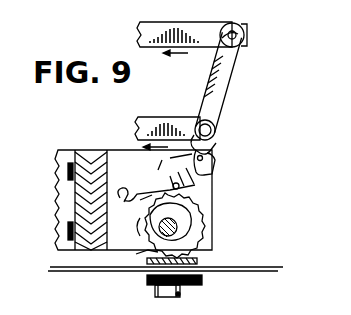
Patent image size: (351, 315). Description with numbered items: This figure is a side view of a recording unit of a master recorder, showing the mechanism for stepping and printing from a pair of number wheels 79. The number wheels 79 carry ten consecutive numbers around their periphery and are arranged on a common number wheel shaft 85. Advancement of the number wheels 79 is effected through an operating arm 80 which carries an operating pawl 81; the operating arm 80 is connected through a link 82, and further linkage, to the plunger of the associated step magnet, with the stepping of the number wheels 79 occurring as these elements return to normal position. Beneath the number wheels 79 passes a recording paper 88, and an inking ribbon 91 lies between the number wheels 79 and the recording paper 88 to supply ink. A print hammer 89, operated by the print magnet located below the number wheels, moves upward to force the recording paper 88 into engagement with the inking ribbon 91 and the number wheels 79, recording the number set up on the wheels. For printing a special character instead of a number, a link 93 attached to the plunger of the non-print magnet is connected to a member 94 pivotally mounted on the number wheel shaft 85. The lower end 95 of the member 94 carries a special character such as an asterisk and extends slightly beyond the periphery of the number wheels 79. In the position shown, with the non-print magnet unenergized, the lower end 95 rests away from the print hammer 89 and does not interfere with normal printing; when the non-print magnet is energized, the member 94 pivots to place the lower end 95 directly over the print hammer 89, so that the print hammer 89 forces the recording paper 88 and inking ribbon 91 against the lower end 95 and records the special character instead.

The number wheels 79 is at (200, 233).
The operating arm 80 is at (224, 103).
The operating pawl 81 is at (197, 197).
The link 82 is at (205, 27).
The number wheel shaft 85 is at (148, 227).
The recording paper 88 is at (255, 273).
The print hammer 89 is at (202, 290).
The inking ribbon 91 is at (198, 266).
The link 93 is at (195, 121).
The member 94 is at (213, 138).
The lower end 95 is at (146, 253).